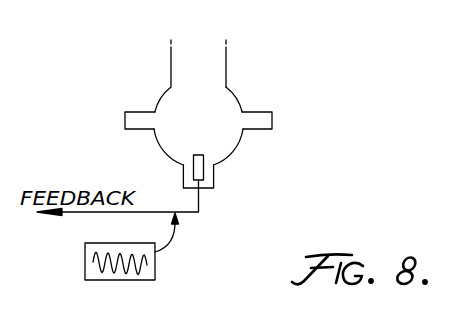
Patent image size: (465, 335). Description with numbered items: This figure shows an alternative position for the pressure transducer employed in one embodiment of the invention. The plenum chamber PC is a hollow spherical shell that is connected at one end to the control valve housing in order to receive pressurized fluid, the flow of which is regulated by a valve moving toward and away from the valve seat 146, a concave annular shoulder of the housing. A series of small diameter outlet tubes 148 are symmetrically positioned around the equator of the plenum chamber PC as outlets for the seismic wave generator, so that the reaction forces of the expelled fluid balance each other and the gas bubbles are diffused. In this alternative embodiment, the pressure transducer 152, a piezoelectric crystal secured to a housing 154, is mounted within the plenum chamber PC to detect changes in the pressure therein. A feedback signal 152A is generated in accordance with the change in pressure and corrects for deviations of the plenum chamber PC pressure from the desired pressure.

The valve seat 146 is at (225, 83).
The outlet tubes 148 is at (125, 117).
The pressure transducer 152 is at (198, 155).
The housing 154 is at (214, 180).
The feedback signal 152A is at (155, 277).
The plenum chamber PC is at (238, 145).